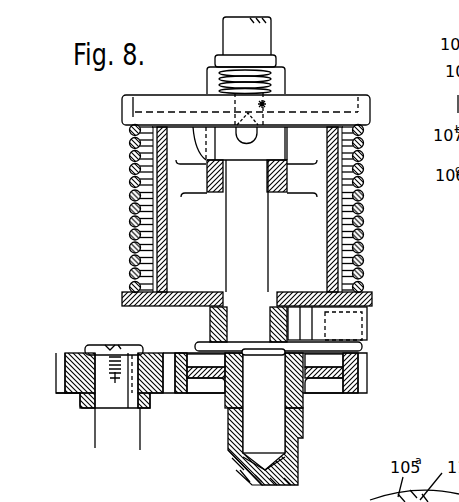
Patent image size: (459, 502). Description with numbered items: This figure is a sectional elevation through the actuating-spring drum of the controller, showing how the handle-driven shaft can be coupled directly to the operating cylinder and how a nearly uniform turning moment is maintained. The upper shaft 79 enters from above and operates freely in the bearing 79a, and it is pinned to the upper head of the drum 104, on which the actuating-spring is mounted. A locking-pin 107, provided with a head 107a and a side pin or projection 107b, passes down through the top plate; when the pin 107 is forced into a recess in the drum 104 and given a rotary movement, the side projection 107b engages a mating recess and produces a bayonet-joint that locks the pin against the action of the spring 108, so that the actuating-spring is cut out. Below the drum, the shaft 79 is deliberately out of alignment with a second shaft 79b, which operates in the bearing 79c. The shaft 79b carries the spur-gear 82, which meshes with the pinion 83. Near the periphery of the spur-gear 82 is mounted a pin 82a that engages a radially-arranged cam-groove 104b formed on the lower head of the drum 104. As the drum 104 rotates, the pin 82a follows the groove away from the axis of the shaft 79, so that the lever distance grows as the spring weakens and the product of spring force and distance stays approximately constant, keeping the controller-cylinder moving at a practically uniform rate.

The head 107a is at (262, 60).
The spring 108 is at (270, 75).
The side pin or projection 107b is at (268, 103).
The locking-pin 107 is at (255, 132).
The drum 104 is at (332, 267).
The shaft 79 is at (255, 243).
The bearing 79a is at (220, 327).
The cam-groove 104b is at (367, 317).
The pin 82a is at (347, 345).
The spur-gear 82 is at (362, 378).
The pinion 83 is at (60, 382).
The shaft 79b is at (305, 427).
The bearing 79c is at (303, 465).